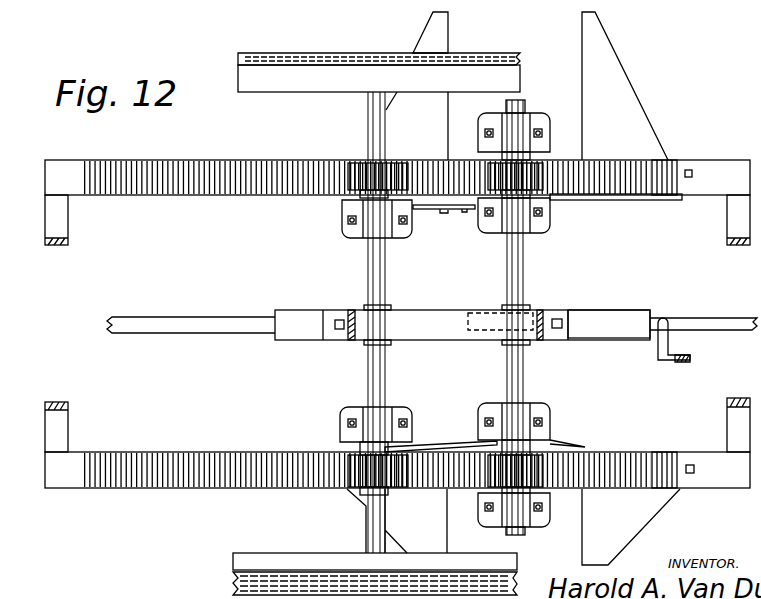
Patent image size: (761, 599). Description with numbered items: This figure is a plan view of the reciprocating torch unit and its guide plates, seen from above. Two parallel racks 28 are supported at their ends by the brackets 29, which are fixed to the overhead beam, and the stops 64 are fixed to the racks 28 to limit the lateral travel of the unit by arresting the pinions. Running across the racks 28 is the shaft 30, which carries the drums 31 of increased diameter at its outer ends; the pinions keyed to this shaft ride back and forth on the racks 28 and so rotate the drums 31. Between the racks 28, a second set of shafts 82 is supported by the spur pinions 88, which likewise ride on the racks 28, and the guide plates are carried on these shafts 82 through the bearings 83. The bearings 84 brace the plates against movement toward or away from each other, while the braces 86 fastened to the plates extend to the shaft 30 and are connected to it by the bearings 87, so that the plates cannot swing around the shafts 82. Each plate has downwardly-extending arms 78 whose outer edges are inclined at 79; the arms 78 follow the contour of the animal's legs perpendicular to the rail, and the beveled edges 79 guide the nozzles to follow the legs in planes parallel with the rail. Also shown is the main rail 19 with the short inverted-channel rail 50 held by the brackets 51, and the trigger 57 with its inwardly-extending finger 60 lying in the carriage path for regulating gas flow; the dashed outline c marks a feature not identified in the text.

The rail 19 is at (713, 318).
The racks 28 is at (197, 195).
The brackets 29 is at (70, 245).
The shaft 30 is at (352, 175).
The drums 31 is at (376, 324).
The short rail 50 is at (609, 323).
The brackets 51 is at (357, 323).
The triggers 57 is at (692, 358).
The fingers 60 is at (668, 343).
The stops 64 is at (677, 165).
The downwardly-extending arms 78 is at (511, 314).
The inclined edges 79 is at (423, 28).
The shafts 82 is at (370, 128).
The bearings 83 is at (550, 222).
The bearings 84 is at (527, 117).
The braces 86 is at (445, 208).
The bearings 87 is at (390, 236).
The spur pinions 88 is at (540, 178).
The opening c is at (480, 333).